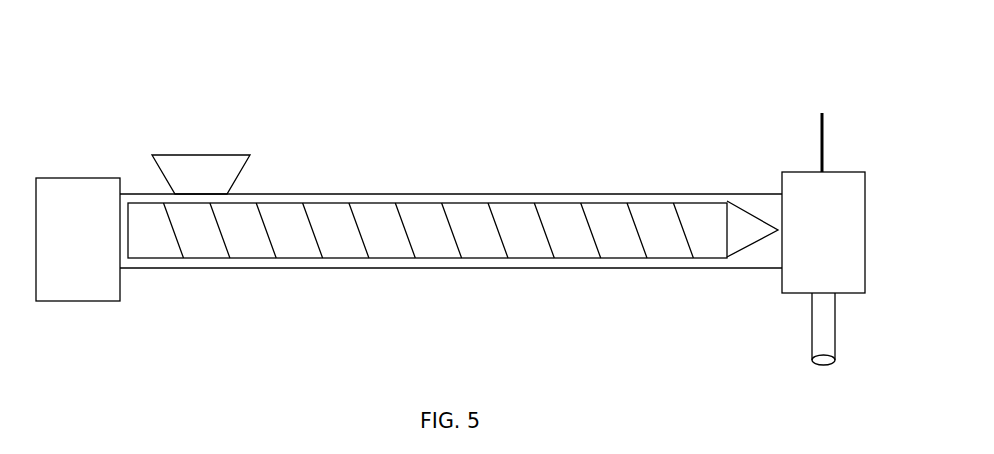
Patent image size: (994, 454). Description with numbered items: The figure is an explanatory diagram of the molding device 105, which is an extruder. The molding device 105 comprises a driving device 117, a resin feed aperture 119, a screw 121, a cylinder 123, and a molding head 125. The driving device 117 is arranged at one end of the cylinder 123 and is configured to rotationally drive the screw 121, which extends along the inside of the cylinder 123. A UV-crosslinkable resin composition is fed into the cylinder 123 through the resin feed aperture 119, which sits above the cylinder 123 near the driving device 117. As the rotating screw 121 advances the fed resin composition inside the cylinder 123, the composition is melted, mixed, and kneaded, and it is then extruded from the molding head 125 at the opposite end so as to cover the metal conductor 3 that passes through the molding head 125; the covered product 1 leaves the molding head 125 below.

The molding device 105 is at (505, 82).
The driving device 117 is at (80, 302).
The resin feed aperture 119 is at (203, 153).
The screw 121 is at (342, 260).
The cylinder 123 is at (590, 269).
The molding head 125 is at (865, 228).
The metal conductor 3 is at (823, 137).
The extruded cable / filament 1 is at (810, 327).